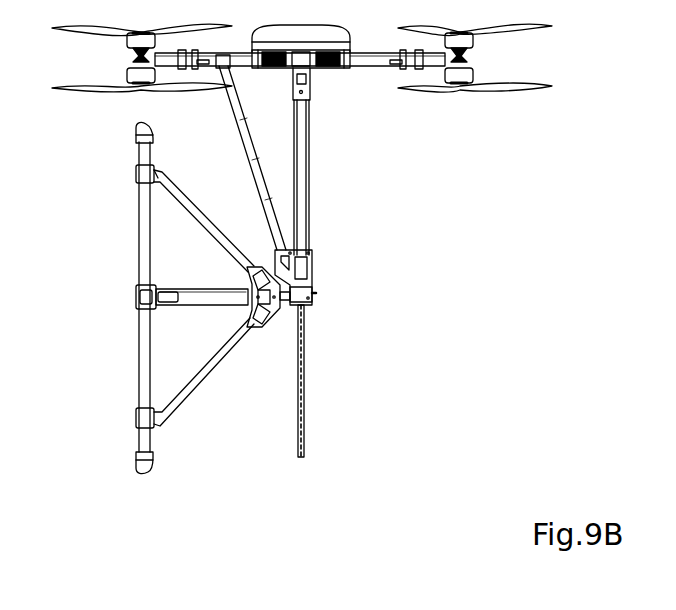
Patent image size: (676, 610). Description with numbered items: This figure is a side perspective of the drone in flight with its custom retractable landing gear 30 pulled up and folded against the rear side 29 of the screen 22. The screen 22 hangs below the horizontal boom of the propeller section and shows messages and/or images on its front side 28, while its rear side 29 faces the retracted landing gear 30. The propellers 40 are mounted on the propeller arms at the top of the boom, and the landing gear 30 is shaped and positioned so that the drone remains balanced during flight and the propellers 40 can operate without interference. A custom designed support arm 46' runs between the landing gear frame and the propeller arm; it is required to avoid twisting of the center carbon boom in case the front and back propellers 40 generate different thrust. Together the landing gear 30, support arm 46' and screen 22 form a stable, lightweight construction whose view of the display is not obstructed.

The propellers 40 is at (530, 30).
The support arm 46' is at (329, 177).
The landing gear 30 is at (144, 345).
The rear side of the screen 29 is at (292, 408).
The front side of the screen 28 is at (318, 408).
The screen 22 is at (303, 443).